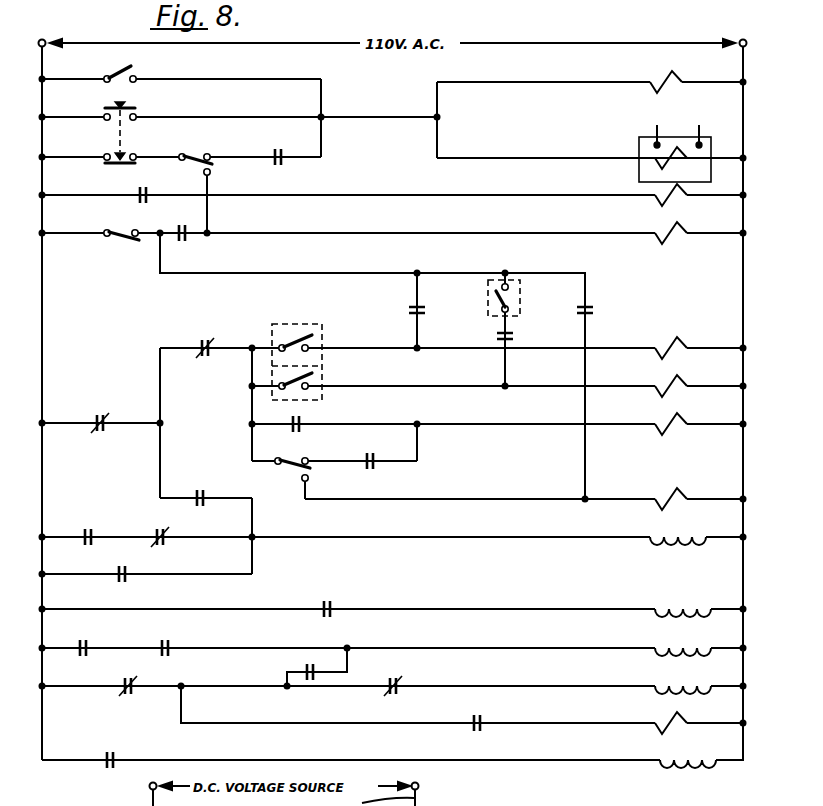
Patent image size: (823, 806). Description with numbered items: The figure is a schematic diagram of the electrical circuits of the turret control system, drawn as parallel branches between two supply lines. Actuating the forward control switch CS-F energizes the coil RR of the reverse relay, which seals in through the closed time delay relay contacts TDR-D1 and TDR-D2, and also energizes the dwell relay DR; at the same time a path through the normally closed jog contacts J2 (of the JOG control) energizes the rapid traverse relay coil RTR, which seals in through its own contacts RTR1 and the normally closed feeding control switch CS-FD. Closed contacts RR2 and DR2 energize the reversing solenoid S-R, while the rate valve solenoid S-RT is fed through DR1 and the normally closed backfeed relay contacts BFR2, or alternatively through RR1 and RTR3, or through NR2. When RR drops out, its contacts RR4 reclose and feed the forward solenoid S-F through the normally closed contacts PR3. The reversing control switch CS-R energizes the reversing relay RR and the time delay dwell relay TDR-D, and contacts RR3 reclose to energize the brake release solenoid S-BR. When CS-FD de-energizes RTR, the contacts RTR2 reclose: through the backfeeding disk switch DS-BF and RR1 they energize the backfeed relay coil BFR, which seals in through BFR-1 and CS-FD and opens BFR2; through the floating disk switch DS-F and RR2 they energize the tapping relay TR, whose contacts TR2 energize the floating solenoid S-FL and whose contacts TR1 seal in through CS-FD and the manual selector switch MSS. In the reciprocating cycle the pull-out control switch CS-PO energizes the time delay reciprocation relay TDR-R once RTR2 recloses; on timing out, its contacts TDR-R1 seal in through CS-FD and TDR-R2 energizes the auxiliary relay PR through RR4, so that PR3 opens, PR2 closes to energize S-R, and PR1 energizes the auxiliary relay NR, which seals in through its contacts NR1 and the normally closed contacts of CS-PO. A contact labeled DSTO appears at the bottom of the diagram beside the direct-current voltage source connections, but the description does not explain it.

The reversing control switch CS-R is at (142, 73).
The jog JOG is at (128, 110).
The jog contacts J2 is at (130, 165).
The forward control switch CS-F is at (200, 154).
The time delay relay contacts TDR-D2 is at (274, 154).
The time delay relay contacts TDR-D1 is at (140, 193).
The feeding control switch CS-FD is at (124, 262).
The rapid traverse relay contacts RTR1 is at (182, 241).
The reverse relay coil RR is at (648, 78).
The time delay dwell relay TDR-D is at (675, 153).
The dwell relay DR is at (672, 203).
The rapid traverse relay coil RTR is at (675, 239).
The backfeed relay contacts BFR-1 is at (403, 312).
The manual selector switch MSS is at (510, 300).
The tapping relay contacts TR1 is at (512, 337).
The time delay reciprocation relay contacts TDR-R1 is at (592, 312).
The backfeeding disk switch DS-BF is at (310, 330).
The floating disk switch DS-F is at (312, 378).
The rapid traverse relay contacts RTR2 is at (196, 345).
The backfeed relay coil BFR is at (664, 347).
The tapping relay TR is at (668, 378).
The reverse relay contacts RR1 is at (93, 421).
The auxiliary relay contacts PR1 is at (310, 425).
The auxiliary relay NR is at (672, 413).
The pull-out control switch CS-PO is at (312, 480).
The auxiliary relay contacts NR1 is at (390, 470).
The rapid traverse relay contacts RTR3 is at (178, 487).
The time delay reciprocation relay TDR-R is at (672, 497).
The dwell relay contacts DR1 is at (86, 534).
The backfeed relay contacts BFR2 is at (168, 530).
The rate valve solenoid S-RT is at (674, 531).
The auxiliary relay contacts NR2 is at (126, 580).
The reverse relay contacts RR3 is at (340, 606).
The brake release solenoid S-BR is at (670, 608).
The reverse relay contacts RR2 is at (78, 647).
The dwell relay contacts DR2 is at (172, 640).
The reversing solenoid S-R is at (672, 647).
The auxiliary relay contacts PR2 is at (300, 670).
The auxiliary relay contacts PR3 is at (404, 682).
The forward solenoid S-F is at (672, 686).
The reverse relay contacts RR4 is at (124, 696).
The time delay reciprocation relay contacts TDR-R2 is at (475, 722).
The auxiliary relay PR is at (670, 722).
The tapping relay contacts TR2 is at (116, 752).
The floating solenoid S-FL is at (680, 776).
The DC stop contact DSTO is at (420, 802).